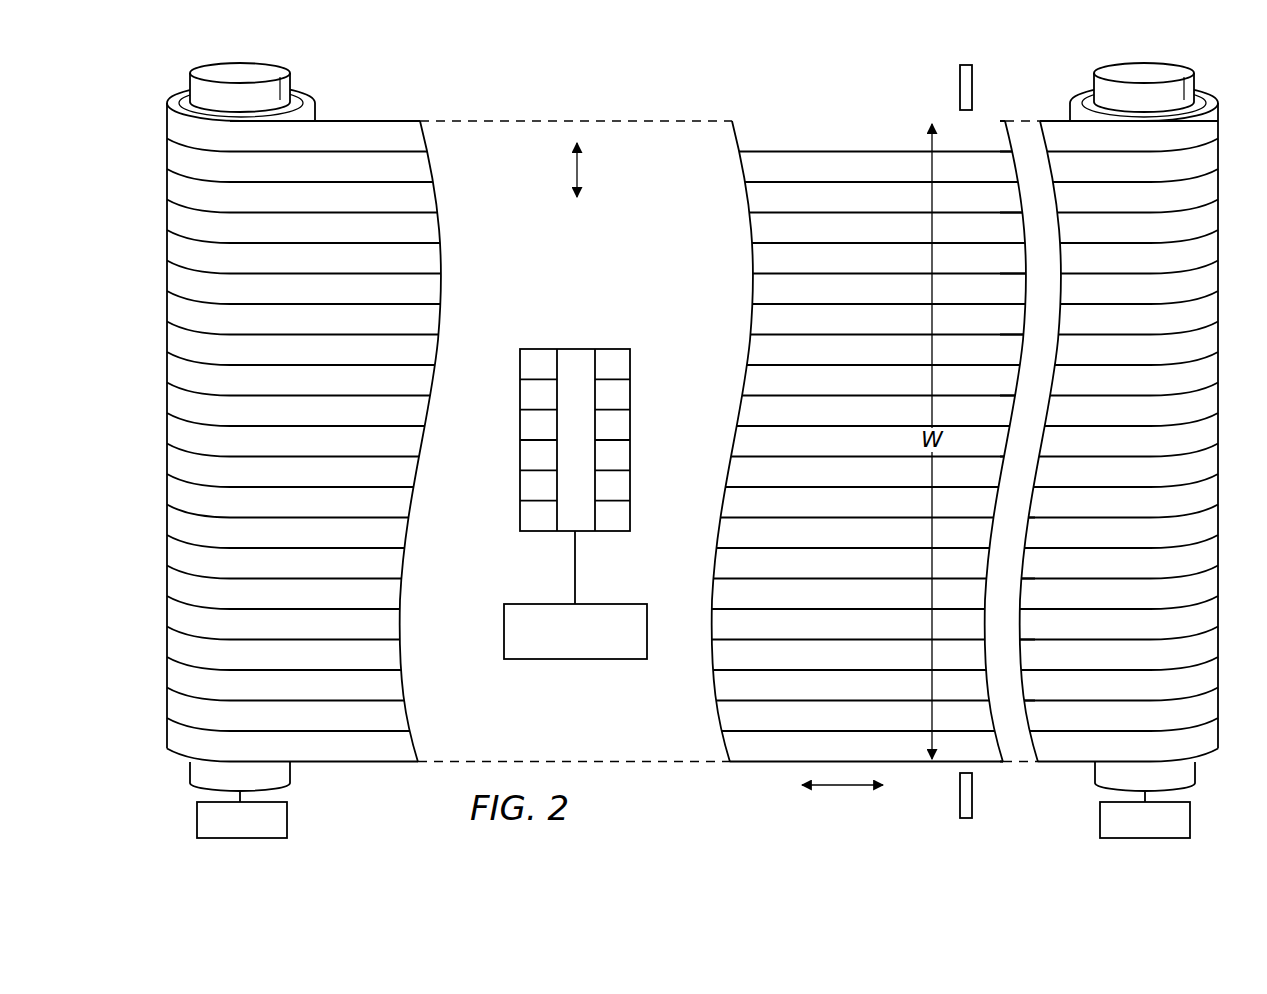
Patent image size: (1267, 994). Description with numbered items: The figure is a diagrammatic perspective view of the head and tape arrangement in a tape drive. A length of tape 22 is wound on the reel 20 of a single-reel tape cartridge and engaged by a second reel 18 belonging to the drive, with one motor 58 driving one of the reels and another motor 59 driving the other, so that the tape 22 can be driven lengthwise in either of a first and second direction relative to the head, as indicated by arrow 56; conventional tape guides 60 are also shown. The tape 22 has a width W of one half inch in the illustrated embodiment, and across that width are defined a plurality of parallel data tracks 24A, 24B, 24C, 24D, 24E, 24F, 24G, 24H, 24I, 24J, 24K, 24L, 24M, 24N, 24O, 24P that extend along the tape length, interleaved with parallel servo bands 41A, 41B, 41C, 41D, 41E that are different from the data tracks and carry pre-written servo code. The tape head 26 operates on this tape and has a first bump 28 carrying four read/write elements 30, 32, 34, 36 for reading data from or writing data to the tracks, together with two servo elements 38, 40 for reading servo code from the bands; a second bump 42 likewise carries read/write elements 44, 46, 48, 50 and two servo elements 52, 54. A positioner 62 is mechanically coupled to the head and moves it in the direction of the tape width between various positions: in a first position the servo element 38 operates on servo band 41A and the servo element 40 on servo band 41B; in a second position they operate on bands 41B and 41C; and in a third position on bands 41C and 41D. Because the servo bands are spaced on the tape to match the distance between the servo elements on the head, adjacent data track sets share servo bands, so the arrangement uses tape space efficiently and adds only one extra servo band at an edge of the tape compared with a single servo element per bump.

The second reel 18 is at (290, 74).
The reel 20 is at (1180, 75).
The tape 22 is at (343, 765).
The parallel track 24A is at (867, 168).
The parallel track 24B is at (867, 199).
The parallel track 24C is at (867, 229).
The parallel track 24D is at (867, 260).
The parallel track 24E is at (867, 321).
The parallel track 24F is at (867, 351).
The parallel track 24G is at (867, 382).
The parallel track 24H is at (867, 412).
The parallel track 24I is at (867, 473).
The parallel track 24J is at (867, 504).
The parallel track 24K is at (867, 534).
The parallel track 24L is at (867, 565).
The parallel track 24M is at (867, 626).
The parallel track 24N is at (867, 656).
The parallel track 24O is at (867, 687).
The parallel track 24P is at (867, 717).
The servo band 41A is at (867, 138).
The servo band 41B is at (867, 290).
The servo band 41C is at (867, 443).
The servo band 41D is at (867, 595).
The servo band 41E is at (867, 748).
The tape head 26 is at (584, 421).
The first bump 28 is at (508, 444).
The read/write element 30 is at (535, 398).
The read/write element 32 is at (535, 429).
The read/write element 34 is at (535, 459).
The read/write element 36 is at (535, 489).
The servo element 38 is at (535, 368).
The servo element 40 is at (535, 520).
The second bump 42 is at (652, 421).
The read/write element 44 is at (616, 397).
The read/write element 46 is at (616, 428).
The read/write element 48 is at (616, 458).
The read/write element 50 is at (616, 488).
The servo element 52 is at (616, 367).
The servo element 54 is at (616, 518).
The arrow 56 is at (838, 788).
The motor 58 is at (1192, 820).
The motor 59 is at (288, 820).
The tape guide 60 is at (960, 85).
The positioner 62 is at (504, 630).